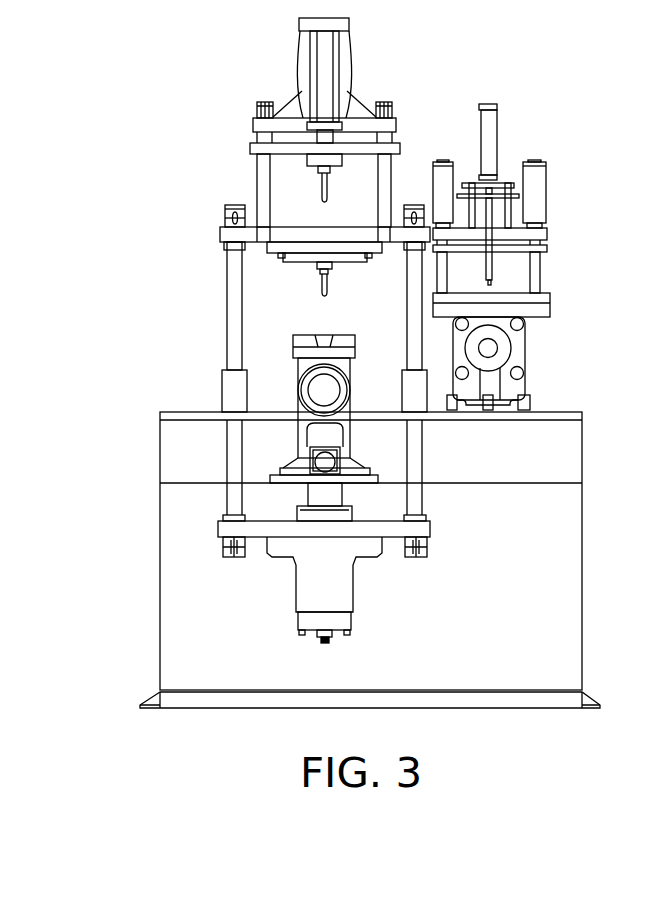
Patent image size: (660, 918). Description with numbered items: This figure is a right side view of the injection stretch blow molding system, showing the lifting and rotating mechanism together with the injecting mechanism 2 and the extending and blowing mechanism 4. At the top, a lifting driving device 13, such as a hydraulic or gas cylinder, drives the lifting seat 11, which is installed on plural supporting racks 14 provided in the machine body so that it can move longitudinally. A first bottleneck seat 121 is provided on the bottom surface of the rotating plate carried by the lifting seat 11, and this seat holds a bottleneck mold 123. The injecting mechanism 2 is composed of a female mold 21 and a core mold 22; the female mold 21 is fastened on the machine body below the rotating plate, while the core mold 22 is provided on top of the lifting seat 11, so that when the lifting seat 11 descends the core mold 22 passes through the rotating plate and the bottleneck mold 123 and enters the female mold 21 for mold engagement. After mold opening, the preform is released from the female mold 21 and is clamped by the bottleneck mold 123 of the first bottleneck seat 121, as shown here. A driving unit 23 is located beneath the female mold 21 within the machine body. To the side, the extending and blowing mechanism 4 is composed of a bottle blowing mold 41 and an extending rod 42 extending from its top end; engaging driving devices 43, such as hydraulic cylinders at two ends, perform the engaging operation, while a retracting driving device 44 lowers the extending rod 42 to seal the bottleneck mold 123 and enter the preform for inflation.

The lifting driving device 13 is at (320, 72).
The bottleneck mold 123 is at (320, 183).
The lifting seat 11 is at (235, 235).
The first bottleneck seat 121 is at (317, 258).
The core mold 22 is at (318, 282).
The supporting racks 14 is at (233, 319).
The female mold 21 is at (308, 349).
The injecting mechanism 2 is at (285, 388).
The driving motor 23 is at (317, 586).
The extending and blowing mechanism 4 is at (529, 241).
The retracting driving device 44 is at (537, 186).
The extending rod 42 is at (503, 217).
The bottle blowing mold 41 is at (515, 343).
The engaging driving devices 43 is at (487, 368).